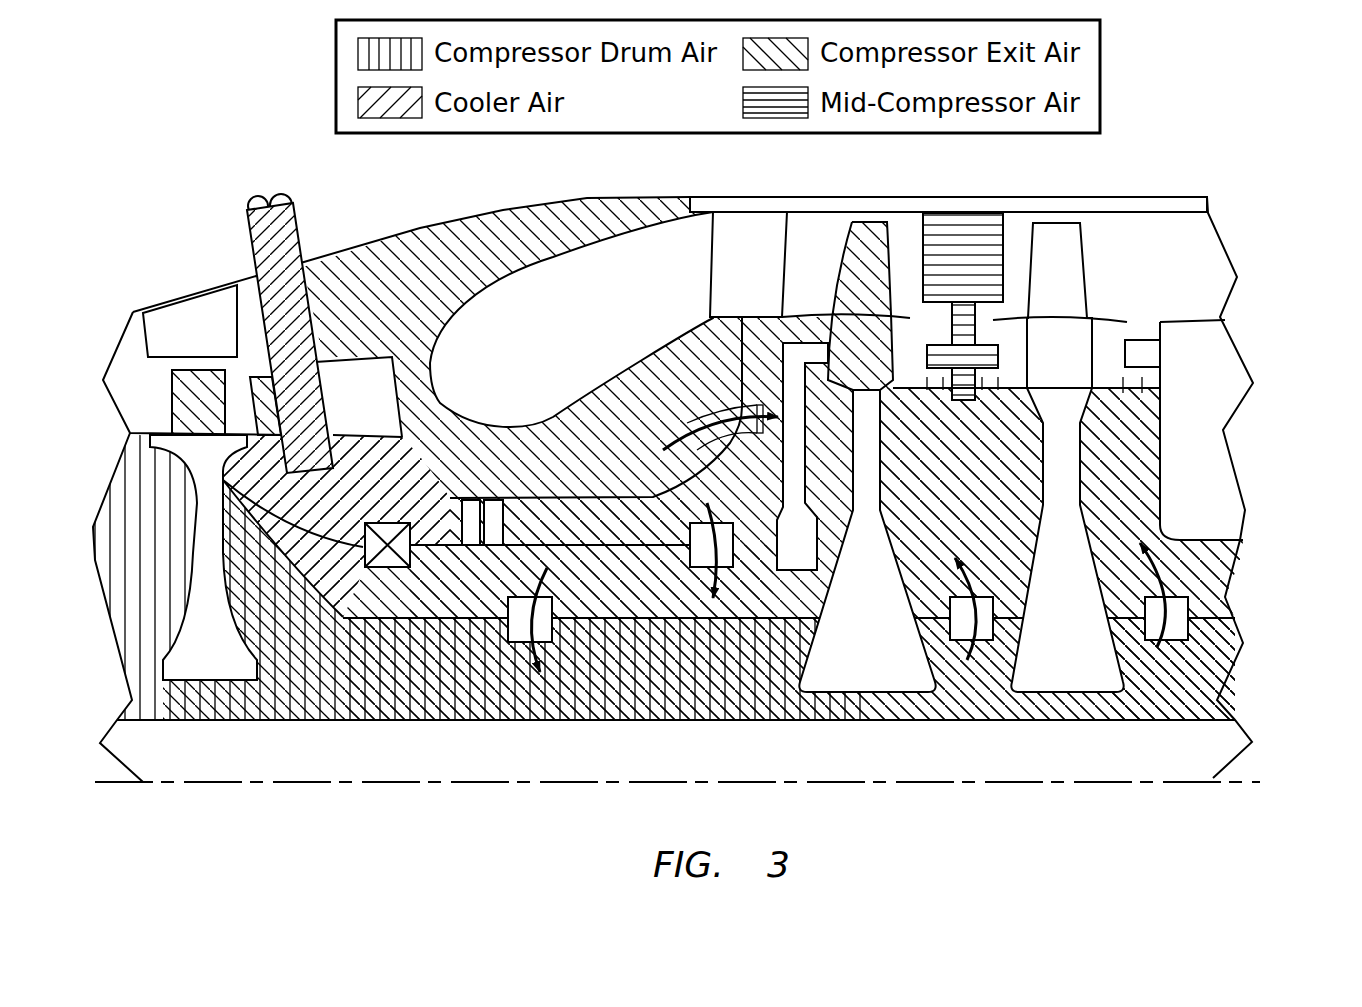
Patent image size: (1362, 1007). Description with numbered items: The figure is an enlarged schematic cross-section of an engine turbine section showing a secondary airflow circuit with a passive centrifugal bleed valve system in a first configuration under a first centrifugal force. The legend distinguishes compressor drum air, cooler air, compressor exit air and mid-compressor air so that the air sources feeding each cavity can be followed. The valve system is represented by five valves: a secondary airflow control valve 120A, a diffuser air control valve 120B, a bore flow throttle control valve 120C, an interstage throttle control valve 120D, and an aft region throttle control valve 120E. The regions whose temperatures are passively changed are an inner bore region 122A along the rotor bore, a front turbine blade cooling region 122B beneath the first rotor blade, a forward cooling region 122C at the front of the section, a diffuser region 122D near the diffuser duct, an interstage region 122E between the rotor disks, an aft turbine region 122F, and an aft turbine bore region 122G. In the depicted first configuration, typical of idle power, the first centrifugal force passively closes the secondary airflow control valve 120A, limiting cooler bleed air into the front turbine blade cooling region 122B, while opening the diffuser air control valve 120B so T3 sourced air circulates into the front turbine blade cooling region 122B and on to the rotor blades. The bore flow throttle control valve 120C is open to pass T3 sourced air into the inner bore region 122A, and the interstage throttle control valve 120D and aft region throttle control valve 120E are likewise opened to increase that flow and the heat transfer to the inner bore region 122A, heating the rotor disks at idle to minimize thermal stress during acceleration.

The secondary airflow control valve 120A is at (383, 560).
The diffuser air control valve 120B is at (733, 568).
The bore flow throttle control valve 120C is at (517, 633).
The interstage throttle control valve 120D is at (960, 628).
The aft region throttle control valve 120E is at (1190, 626).
The inner bore region 122A is at (667, 682).
The front turbine blade cooling region 122B is at (647, 597).
The forward cooling region 122C is at (177, 553).
The diffuser region 122D is at (372, 509).
The interstage region 122E is at (994, 483).
The aft turbine region 122F is at (1150, 467).
The aft turbine bore region 122G is at (1207, 693).